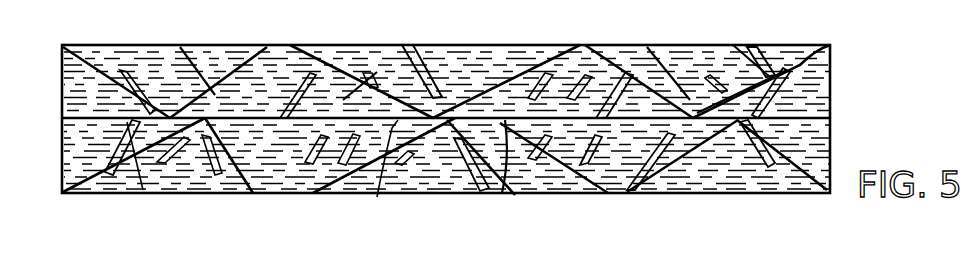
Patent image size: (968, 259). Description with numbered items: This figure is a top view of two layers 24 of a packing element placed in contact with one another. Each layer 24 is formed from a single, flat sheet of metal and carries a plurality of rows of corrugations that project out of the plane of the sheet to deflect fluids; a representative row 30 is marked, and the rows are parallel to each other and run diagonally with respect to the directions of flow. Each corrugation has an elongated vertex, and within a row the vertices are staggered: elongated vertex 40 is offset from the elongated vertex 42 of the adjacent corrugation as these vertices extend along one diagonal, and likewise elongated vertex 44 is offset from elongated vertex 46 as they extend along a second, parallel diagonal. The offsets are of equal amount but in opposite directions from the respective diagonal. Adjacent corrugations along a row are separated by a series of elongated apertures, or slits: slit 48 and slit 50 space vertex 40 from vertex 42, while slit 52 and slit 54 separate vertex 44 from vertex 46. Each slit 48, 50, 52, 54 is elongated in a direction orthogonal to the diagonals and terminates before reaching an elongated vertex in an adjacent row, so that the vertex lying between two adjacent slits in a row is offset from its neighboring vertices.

The layer 24 is at (840, 65).
The row 30 is at (540, 64).
The elongated vertex 40 is at (173, 112).
The elongated vertex 42 is at (63, 128).
The elongated vertex 44 is at (470, 120).
The elongated vertex 46 is at (555, 123).
The slit 48 is at (400, 48).
The slit 50 is at (647, 46).
The slit 52 is at (277, 120).
The slit 54 is at (515, 195).